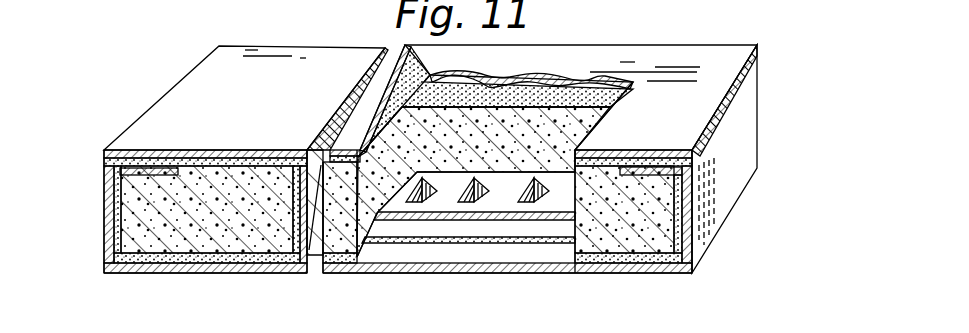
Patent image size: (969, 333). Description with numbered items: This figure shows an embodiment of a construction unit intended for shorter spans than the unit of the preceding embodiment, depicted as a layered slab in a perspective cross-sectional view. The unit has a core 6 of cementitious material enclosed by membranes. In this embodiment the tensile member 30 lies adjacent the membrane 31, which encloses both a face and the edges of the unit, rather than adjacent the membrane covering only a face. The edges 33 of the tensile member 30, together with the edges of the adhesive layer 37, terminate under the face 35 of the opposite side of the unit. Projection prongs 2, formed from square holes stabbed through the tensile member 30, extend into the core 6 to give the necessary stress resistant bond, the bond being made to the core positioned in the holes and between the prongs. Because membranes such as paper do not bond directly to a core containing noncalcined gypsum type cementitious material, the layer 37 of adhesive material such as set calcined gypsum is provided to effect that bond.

The projection prongs 2 is at (467, 200).
The core 6 is at (137, 247).
The tensile member 30 is at (163, 266).
The membrane 31 is at (123, 222).
The edges 33 is at (147, 173).
The face 35 is at (137, 149).
The layer 37 is at (104, 161).